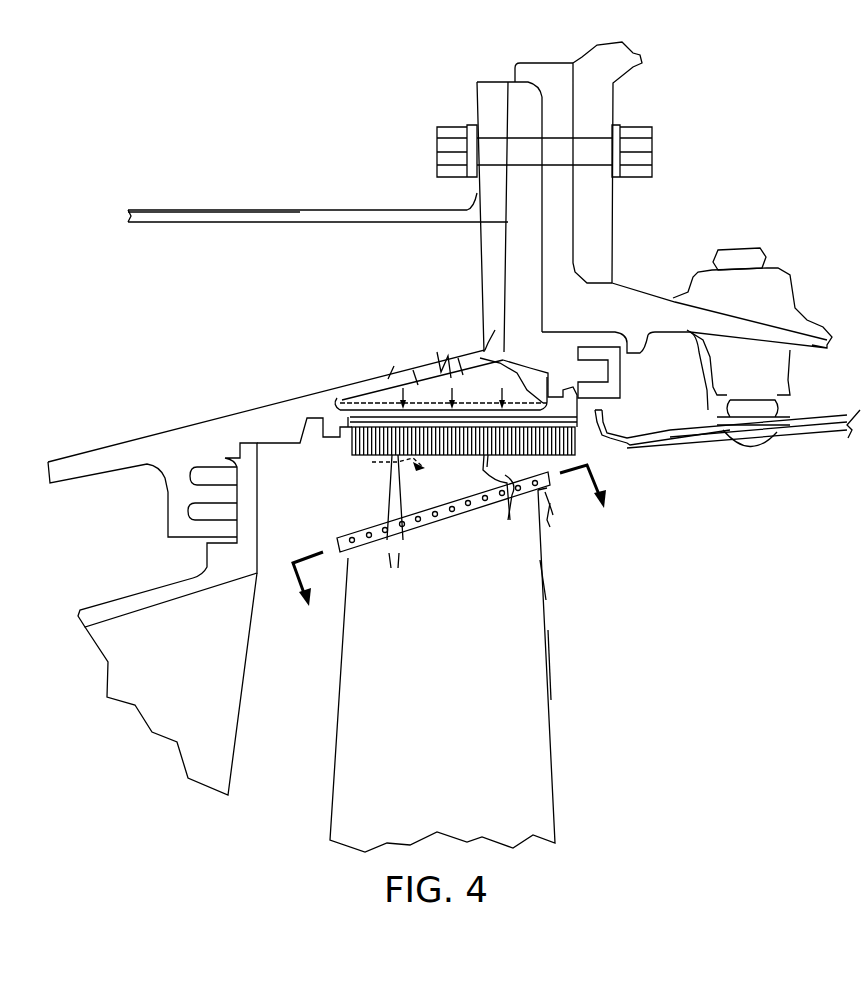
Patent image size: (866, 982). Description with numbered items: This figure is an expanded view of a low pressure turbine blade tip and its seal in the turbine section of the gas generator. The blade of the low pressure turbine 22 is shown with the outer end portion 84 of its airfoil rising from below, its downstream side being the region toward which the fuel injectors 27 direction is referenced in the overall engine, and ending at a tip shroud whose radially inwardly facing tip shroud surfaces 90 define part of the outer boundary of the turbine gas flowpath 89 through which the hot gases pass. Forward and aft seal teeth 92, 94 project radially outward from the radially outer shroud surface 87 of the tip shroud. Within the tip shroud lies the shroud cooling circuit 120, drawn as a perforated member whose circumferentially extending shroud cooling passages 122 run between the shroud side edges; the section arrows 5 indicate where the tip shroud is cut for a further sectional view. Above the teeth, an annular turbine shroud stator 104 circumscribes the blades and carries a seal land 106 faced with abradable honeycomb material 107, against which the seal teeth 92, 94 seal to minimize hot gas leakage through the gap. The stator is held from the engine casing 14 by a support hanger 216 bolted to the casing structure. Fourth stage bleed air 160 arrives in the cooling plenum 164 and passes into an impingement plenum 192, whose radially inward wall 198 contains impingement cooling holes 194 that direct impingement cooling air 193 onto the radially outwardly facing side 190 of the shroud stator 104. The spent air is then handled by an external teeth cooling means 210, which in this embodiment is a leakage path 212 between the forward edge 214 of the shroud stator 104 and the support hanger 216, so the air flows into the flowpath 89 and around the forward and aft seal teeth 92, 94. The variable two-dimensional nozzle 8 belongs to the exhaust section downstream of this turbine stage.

The engine casing 14 is at (323, 218).
The cooling plenum 164 is at (211, 245).
The impingement plenum 192 is at (487, 350).
The radially inward wall 198 is at (527, 373).
The radially outwardly facing side 190 is at (595, 412).
The external teeth cooling means 210 is at (293, 413).
The leakage path 212 is at (337, 445).
The support hanger 216 is at (243, 422).
The forward edge 214 is at (267, 463).
The turbine gas flowpath 89 is at (273, 742).
The turbine shroud stator 104 is at (440, 390).
The impingement cooling air 193 is at (500, 388).
The bleed air 160 is at (426, 378).
The impingement cooling holes 194 is at (403, 388).
The honeycomb material 107 is at (385, 455).
The seal land 106 is at (577, 447).
The forward seal tooth 92 is at (400, 497).
The radially outer shroud surface 87 is at (382, 523).
The variable 2-D nozzle 8 is at (350, 535).
The aft seal tooth 94 is at (509, 522).
The tip shroud surfaces 90 is at (552, 516).
The shroud cooling circuit 120 is at (457, 530).
The shroud cooling passages 122 is at (398, 558).
The low pressure turbine 22 is at (552, 712).
The outer end portion 84 is at (548, 630).
The fuel injectors 27 is at (545, 578).
The section line 5- 5 is at (453, 552).